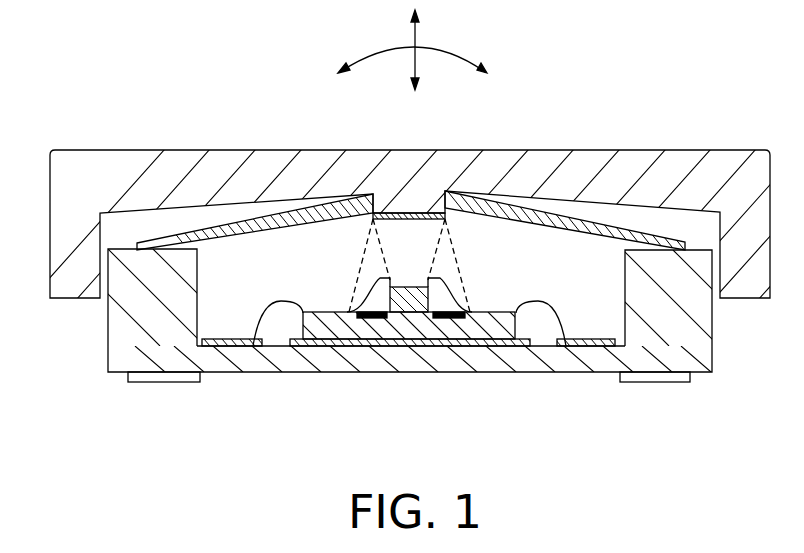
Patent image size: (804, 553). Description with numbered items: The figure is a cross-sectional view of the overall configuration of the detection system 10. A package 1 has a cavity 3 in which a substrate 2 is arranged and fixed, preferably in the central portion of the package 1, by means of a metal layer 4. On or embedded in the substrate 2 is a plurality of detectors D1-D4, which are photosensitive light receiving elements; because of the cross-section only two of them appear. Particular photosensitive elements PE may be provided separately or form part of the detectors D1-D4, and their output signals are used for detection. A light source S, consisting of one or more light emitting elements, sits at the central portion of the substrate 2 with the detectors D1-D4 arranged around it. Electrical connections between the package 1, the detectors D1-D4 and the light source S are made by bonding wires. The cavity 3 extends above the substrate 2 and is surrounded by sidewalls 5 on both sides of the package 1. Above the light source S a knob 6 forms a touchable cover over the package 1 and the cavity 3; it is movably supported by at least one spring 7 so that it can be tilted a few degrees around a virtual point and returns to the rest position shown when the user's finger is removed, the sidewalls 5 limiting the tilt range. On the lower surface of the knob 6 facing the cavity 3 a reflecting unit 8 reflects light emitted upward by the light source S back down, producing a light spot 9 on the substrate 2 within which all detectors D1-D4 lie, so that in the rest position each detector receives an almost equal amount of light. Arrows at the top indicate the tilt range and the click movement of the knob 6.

The detection system 10 is at (150, 106).
The knob 6 is at (410, 165).
The reflecting unit 8 is at (401, 218).
The spring 7 is at (258, 230).
The light spot 9 is at (373, 253).
The cavity 3 is at (547, 258).
The light source S is at (412, 287).
The sidewalls 5 is at (128, 333).
The package 1 is at (303, 362).
The substrate 2 is at (503, 335).
The metal layer 4 is at (445, 320).
The detectors D1-D4 is at (450, 318).
The photosensitive elements PE is at (411, 388).